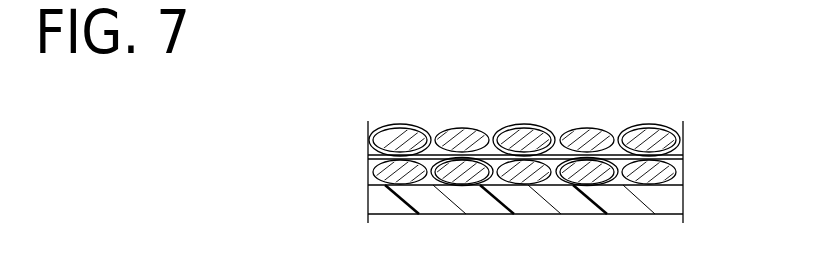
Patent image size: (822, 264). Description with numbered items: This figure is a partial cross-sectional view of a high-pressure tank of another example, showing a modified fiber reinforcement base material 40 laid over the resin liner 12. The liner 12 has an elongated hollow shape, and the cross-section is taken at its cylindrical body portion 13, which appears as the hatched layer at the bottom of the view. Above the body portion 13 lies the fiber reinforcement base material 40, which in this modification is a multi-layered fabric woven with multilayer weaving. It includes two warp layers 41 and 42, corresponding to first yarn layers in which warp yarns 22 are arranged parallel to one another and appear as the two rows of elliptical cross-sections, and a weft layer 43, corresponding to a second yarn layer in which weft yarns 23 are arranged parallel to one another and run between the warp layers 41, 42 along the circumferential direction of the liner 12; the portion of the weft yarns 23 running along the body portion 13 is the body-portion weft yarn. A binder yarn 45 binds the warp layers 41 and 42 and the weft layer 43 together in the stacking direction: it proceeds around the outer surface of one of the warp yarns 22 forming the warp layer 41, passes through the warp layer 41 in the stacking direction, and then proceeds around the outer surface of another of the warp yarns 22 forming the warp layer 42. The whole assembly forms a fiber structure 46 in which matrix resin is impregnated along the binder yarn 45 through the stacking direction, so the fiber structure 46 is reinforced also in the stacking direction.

The liner 12 is at (668, 203).
The body portion 13 is at (570, 204).
The warp yarns 22 is at (463, 133).
The weft yarns 23 is at (582, 140).
The fiber reinforcement base material 40 is at (684, 104).
The warp layer 41 is at (364, 143).
The warp layer 42 is at (364, 174).
The weft layer 43 is at (364, 158).
The binder yarn 45 is at (401, 127).
The fiber structure 46 is at (688, 142).